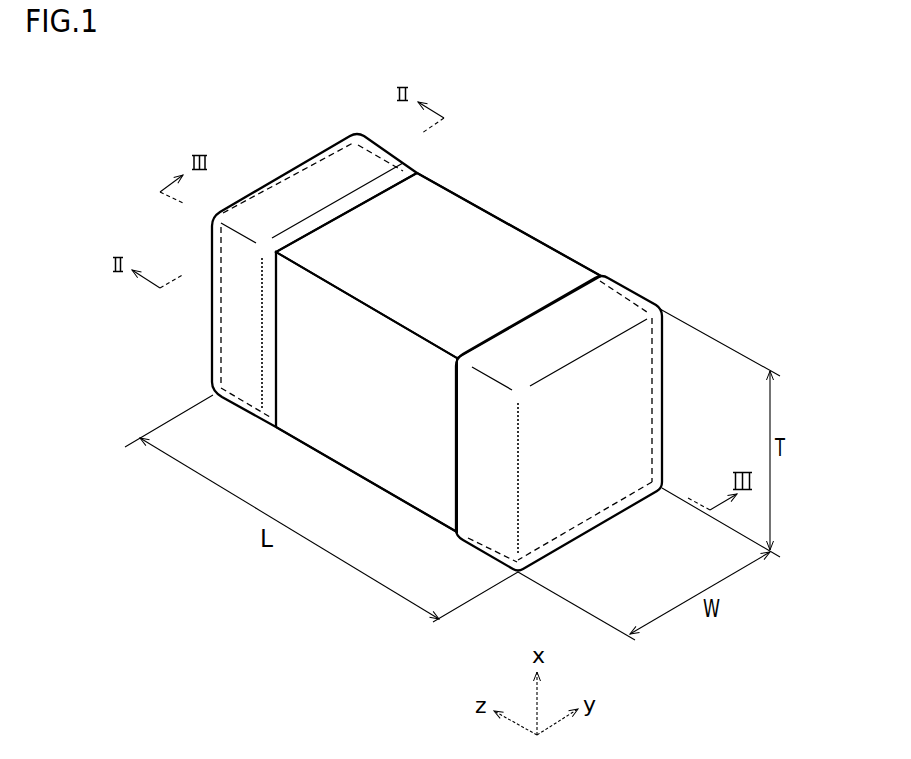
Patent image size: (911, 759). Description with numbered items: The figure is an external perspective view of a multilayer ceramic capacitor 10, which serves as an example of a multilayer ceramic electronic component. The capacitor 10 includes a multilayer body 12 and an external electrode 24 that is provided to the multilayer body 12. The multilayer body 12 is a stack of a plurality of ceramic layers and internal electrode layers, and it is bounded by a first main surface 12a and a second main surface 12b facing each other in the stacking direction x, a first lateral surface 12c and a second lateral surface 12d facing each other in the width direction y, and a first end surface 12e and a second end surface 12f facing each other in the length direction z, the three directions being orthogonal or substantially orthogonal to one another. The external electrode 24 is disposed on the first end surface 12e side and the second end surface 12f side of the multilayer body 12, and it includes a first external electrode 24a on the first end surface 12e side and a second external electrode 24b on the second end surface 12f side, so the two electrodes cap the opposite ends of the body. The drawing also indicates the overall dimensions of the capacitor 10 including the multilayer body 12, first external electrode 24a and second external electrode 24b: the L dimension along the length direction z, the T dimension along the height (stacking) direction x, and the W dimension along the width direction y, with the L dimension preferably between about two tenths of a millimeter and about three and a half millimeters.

The multilayer ceramic capacitor 10 is at (160, 110).
The multilayer body 12 is at (545, 248).
The first main surface 12a is at (503, 252).
The second main surface 12b is at (340, 451).
The first lateral surface 12c is at (395, 465).
The second lateral surface 12d is at (465, 232).
The first end surface 12e is at (300, 188).
The second end surface 12f is at (625, 392).
The external electrode 24 is at (467, 312).
The first external electrode 24a is at (372, 140).
The second external electrode 24b is at (630, 287).